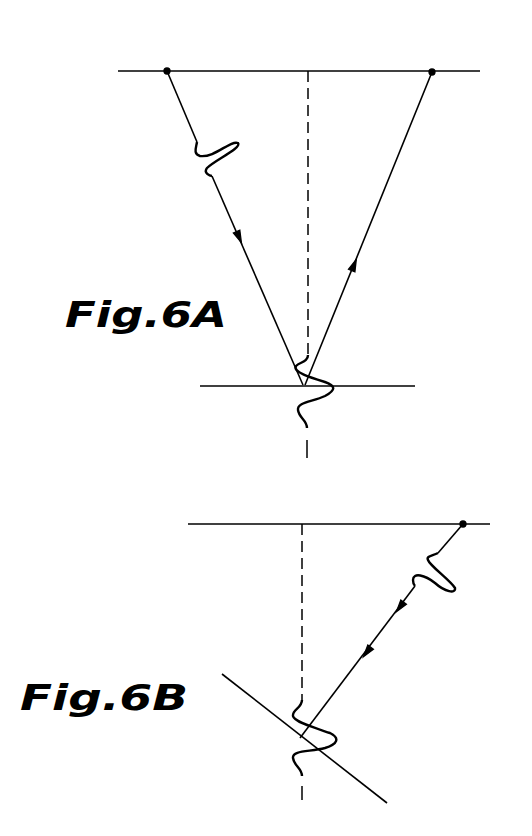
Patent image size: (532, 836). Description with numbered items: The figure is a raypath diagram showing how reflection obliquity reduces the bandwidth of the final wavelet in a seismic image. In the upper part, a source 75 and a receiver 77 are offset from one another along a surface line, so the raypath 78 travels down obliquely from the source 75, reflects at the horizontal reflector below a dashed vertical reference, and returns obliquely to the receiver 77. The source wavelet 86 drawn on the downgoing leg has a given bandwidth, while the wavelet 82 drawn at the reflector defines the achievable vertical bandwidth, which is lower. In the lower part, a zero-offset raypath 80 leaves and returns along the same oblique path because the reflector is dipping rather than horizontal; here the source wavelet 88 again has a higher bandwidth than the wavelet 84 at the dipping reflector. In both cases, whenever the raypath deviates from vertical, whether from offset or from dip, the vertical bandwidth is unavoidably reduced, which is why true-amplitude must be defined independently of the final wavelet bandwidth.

In FIG. 6A, the source 75 is at (167, 71).
In FIG. 6A, the receiver 77 is at (434, 75).
In FIG. 6A, the raypath 78 is at (368, 237).
In FIG. 6A, the source wavelet 86 is at (238, 143).
In FIG. 6A, the wavelet 82 is at (318, 396).
In FIG. 6B, the source wavelet 88 is at (438, 553).
In FIG. 6B, the zero-offset raypath 80 is at (336, 692).
In FIG. 6B, the wavelet 84 is at (340, 738).